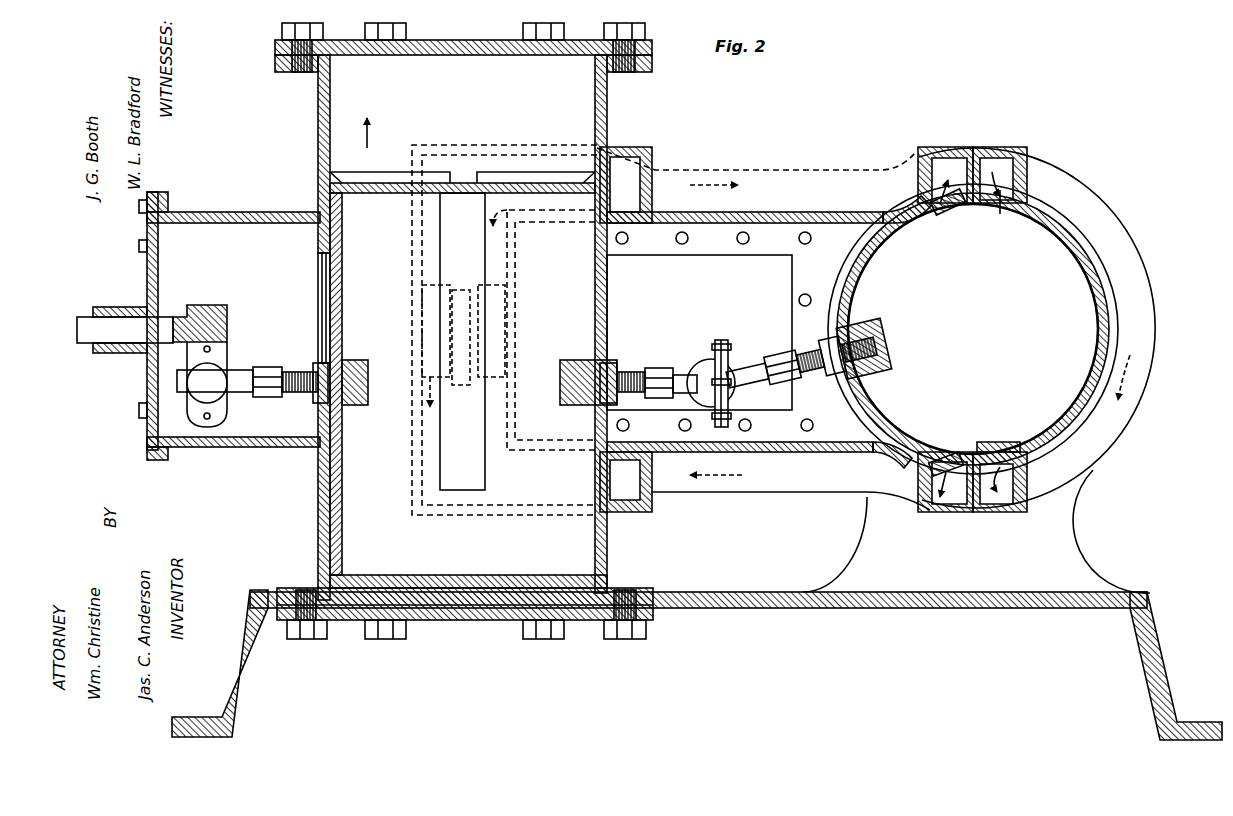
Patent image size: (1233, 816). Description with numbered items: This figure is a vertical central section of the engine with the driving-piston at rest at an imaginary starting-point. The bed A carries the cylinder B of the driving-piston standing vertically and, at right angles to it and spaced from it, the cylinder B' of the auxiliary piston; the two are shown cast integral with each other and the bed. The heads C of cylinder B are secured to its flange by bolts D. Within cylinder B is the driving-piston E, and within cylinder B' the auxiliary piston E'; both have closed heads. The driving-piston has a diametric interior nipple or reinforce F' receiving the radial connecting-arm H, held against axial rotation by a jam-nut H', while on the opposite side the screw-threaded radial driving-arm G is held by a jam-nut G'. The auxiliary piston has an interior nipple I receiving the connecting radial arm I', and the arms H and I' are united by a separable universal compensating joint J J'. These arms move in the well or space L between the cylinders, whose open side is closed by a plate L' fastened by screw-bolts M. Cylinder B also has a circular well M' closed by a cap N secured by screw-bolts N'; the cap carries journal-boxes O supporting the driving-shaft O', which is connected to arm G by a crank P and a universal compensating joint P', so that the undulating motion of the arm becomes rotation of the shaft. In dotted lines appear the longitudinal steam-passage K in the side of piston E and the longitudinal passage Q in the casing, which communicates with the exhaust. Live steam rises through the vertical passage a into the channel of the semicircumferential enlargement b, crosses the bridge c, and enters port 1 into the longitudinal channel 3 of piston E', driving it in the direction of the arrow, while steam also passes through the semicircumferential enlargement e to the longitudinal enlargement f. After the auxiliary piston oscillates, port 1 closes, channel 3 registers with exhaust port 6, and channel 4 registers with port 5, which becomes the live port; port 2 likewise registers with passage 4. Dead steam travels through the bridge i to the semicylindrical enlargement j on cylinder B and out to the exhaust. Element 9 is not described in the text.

The bed A is at (703, 592).
The cylinder of the driving-piston B is at (464, 337).
The cylinder of the auxiliary piston B' is at (1037, 328).
The heads of cylinder B C is at (468, 40).
The bolts D is at (395, 27).
The driving-piston E is at (462, 373).
The auxiliary piston E' is at (973, 329).
The interior nipple or reinforce F' is at (479, 361).
The radial driving-arm G is at (247, 366).
The jam-nut G' is at (312, 358).
The radial connecting-arm H is at (657, 367).
The jam-nut H' is at (630, 364).
The interior nipple or reinforce I is at (865, 345).
The connecting radial arm I' is at (803, 375).
The universal compensating joint J is at (712, 372).
The universal compensating joint J' is at (775, 364).
The longitudinal steam-passage K is at (460, 176).
The well or space L is at (769, 203).
The plates L' is at (699, 332).
The screw-bolts M is at (714, 330).
The circular well M' is at (233, 315).
The cap N is at (130, 326).
The screw-bolts N' is at (114, 311).
The journal-boxes O is at (125, 320).
The driving-shaft O' is at (111, 360).
The crank P is at (210, 323).
The universal compensating joint P' is at (216, 384).
The longitudinal steam-passage Q is at (463, 346).
The vertical passage a is at (1005, 158).
The semicircumferential enlargement b is at (658, 165).
The bridge c is at (836, 170).
The semicircumferential enlargement e is at (1045, 191).
The longitudinal enlargement f is at (968, 512).
The bridge i is at (768, 476).
The semicylindrical enlargement j is at (655, 512).
The port 1 is at (945, 175).
The port 2 is at (1000, 485).
The longitudinal channel 3 is at (947, 214).
The longitudinal passage 4 is at (992, 455).
The port 5 is at (950, 464).
The port 6 is at (1000, 212).
The slide piston 9 is at (463, 275).